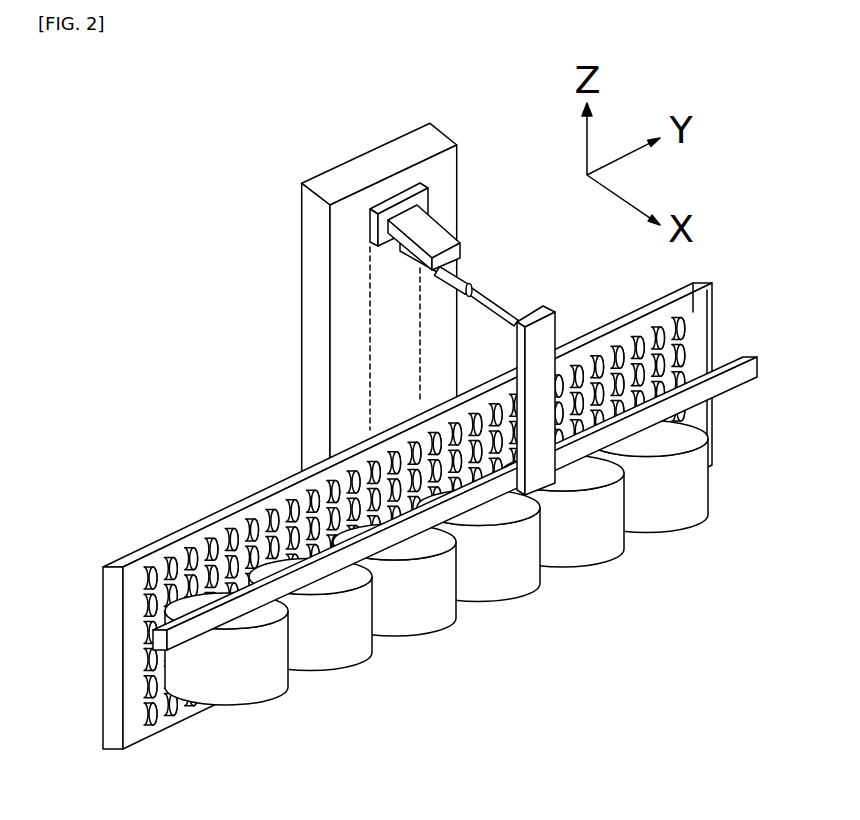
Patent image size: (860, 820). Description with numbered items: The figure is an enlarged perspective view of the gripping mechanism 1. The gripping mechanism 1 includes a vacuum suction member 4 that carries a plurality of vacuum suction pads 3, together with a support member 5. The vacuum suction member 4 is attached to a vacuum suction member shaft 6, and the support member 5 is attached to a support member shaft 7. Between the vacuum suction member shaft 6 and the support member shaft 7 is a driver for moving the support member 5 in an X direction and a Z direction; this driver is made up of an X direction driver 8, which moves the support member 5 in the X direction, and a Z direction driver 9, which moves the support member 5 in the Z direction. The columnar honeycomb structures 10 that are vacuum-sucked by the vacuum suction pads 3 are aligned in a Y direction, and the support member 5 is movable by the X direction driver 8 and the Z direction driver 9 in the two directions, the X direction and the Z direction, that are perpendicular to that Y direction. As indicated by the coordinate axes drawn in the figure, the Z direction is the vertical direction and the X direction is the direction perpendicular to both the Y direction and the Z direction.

The gripping mechanism 1 is at (147, 315).
The vacuum suction pads 3 is at (273, 515).
The vacuum suction member 4 is at (117, 657).
The support member 5 is at (718, 393).
The vacuum suction member shaft 6 is at (310, 348).
The support member shaft 7 is at (536, 458).
The X direction driver 8 is at (493, 304).
The Z direction driver 9 is at (421, 200).
The columnar honeycomb structures 10 is at (332, 640).